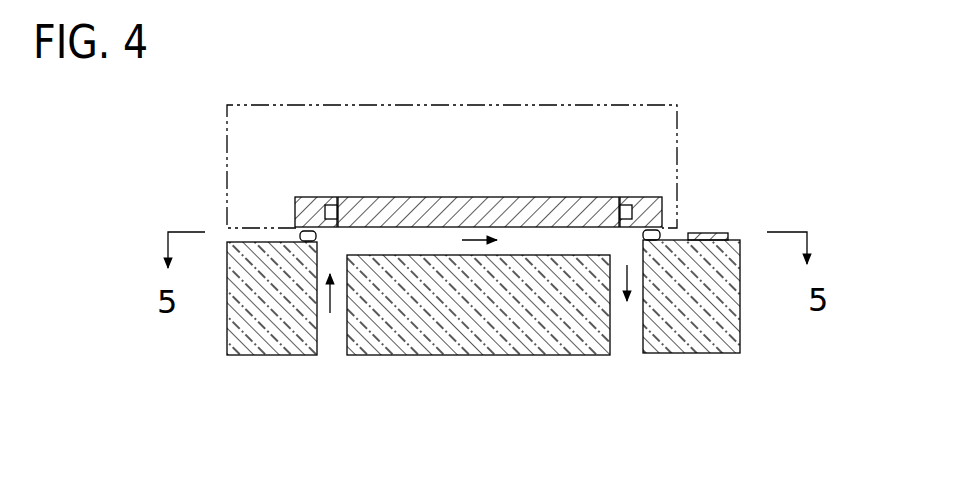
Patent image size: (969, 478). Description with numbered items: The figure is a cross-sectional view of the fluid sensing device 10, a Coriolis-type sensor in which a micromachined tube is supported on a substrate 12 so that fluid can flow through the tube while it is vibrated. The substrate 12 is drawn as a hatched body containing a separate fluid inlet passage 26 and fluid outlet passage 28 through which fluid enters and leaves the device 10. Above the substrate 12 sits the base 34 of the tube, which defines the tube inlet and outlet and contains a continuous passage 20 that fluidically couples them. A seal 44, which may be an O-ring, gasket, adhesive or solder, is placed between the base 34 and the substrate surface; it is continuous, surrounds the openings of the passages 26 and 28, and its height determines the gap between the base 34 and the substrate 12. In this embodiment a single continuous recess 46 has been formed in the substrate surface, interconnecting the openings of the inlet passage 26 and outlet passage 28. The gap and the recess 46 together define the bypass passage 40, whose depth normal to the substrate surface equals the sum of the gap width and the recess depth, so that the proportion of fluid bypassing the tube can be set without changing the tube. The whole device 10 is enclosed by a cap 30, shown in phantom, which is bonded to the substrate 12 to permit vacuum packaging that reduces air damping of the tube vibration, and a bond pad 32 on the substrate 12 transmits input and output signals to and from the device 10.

The fluid sensing device 10 is at (482, 66).
The substrate 12 is at (722, 335).
The continuous passage 20 is at (336, 205).
The fluid inlet passage 26 is at (330, 333).
The fluid outlet passage 28 is at (627, 333).
The cap 30 is at (664, 103).
The bond pad 32 is at (720, 233).
The base 34 is at (478, 197).
The bypass passage 40 is at (443, 250).
The seal 44 is at (306, 242).
The recess 46 is at (522, 254).